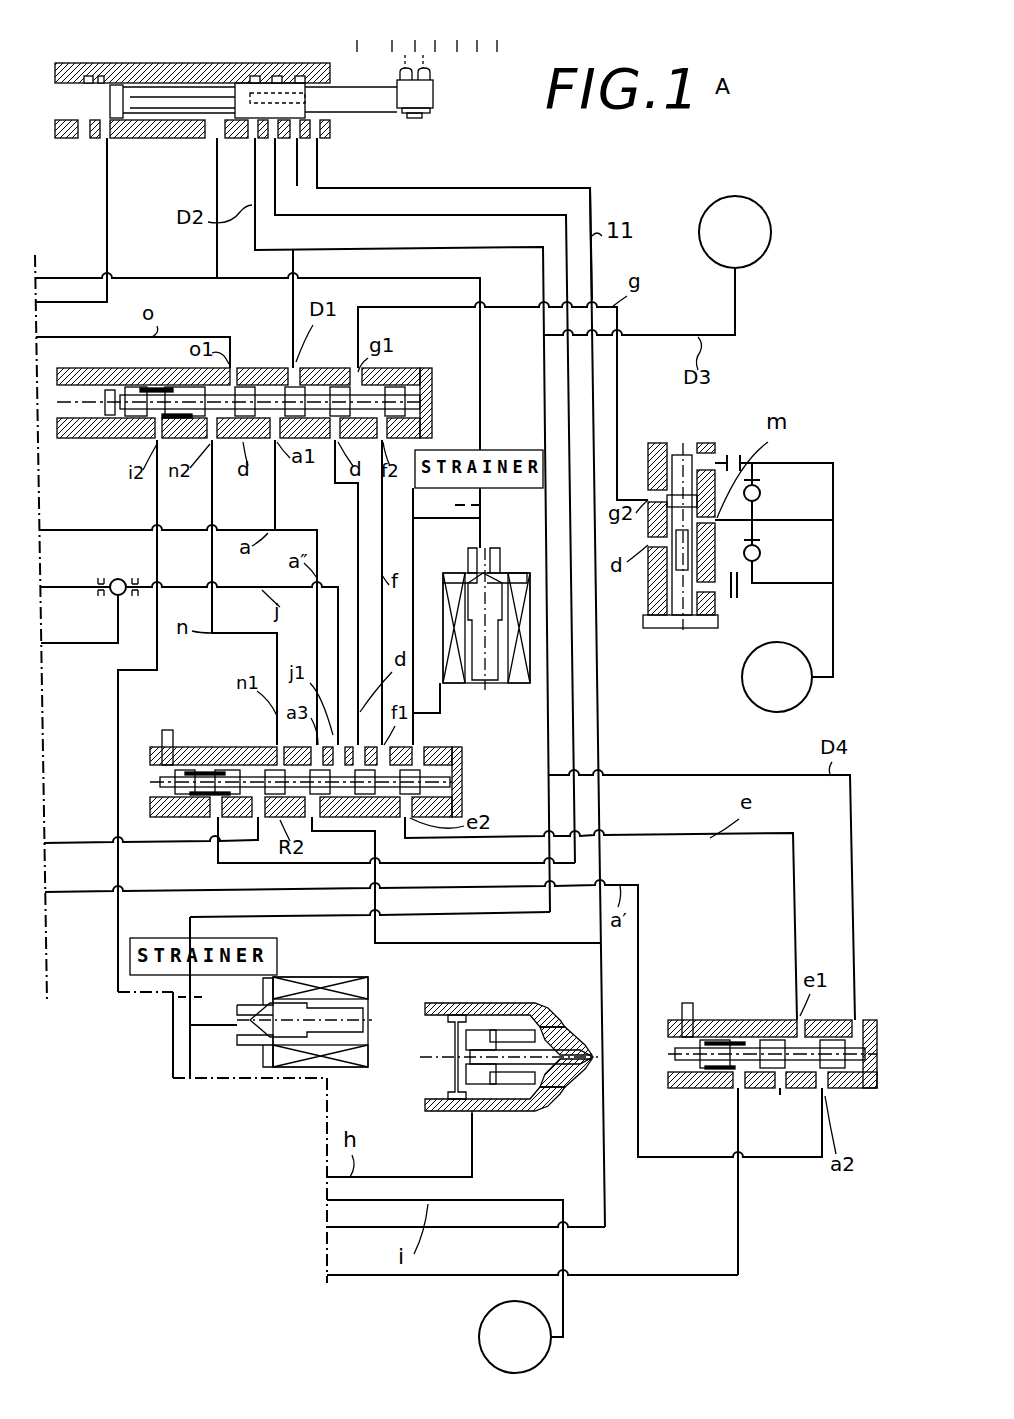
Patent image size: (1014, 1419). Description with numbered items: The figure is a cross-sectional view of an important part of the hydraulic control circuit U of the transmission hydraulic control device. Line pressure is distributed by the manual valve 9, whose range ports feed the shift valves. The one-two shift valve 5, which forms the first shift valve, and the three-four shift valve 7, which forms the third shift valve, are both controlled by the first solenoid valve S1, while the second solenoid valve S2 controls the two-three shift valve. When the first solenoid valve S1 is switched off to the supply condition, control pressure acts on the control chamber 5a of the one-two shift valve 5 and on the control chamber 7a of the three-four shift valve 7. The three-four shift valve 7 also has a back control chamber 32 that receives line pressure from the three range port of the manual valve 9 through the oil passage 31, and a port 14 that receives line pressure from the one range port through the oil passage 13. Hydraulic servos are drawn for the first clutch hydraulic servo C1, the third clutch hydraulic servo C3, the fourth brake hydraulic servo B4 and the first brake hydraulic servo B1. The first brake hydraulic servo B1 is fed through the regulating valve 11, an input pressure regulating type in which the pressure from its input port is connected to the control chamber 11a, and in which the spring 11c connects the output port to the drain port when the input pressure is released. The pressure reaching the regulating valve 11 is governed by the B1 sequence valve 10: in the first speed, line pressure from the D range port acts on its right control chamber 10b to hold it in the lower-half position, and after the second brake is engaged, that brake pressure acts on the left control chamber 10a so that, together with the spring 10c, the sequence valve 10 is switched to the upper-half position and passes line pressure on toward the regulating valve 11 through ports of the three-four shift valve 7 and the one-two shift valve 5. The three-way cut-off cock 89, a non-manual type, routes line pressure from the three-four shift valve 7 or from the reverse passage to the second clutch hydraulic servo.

The manual valve 9 is at (200, 58).
The oil passage 31 is at (495, 190).
The port of the 3-4 shift valve 14 is at (322, 833).
The oil passage 13 is at (468, 946).
The hydraulic circuit U is at (632, 186).
The 1-2 shift valve 5 is at (261, 368).
The control chamber 5a is at (416, 386).
The first solenoid valve S1 is at (518, 568).
The three way cut off cock 89 is at (110, 570).
The 3-4 shift valve 7 is at (282, 755).
The control chamber 7a is at (458, 766).
The back control chamber 32 is at (168, 786).
The second solenoid valve S2 is at (295, 975).
The fourth brake hydraulic servo B4 is at (545, 1010).
The first clutch hydraulic servo C1 is at (735, 232).
The first brake hydraulic servo B1 is at (777, 677).
The third clutch hydraulic servo C3 is at (515, 1337).
The regulating valve 11 is at (694, 527).
The control chamber 11a is at (690, 446).
The spring 11c is at (680, 628).
The B1 sequence valve 10 is at (779, 1031).
The left control chamber 10a is at (725, 1020).
The right control chamber 10b is at (856, 1090).
The spring 10c is at (718, 1090).